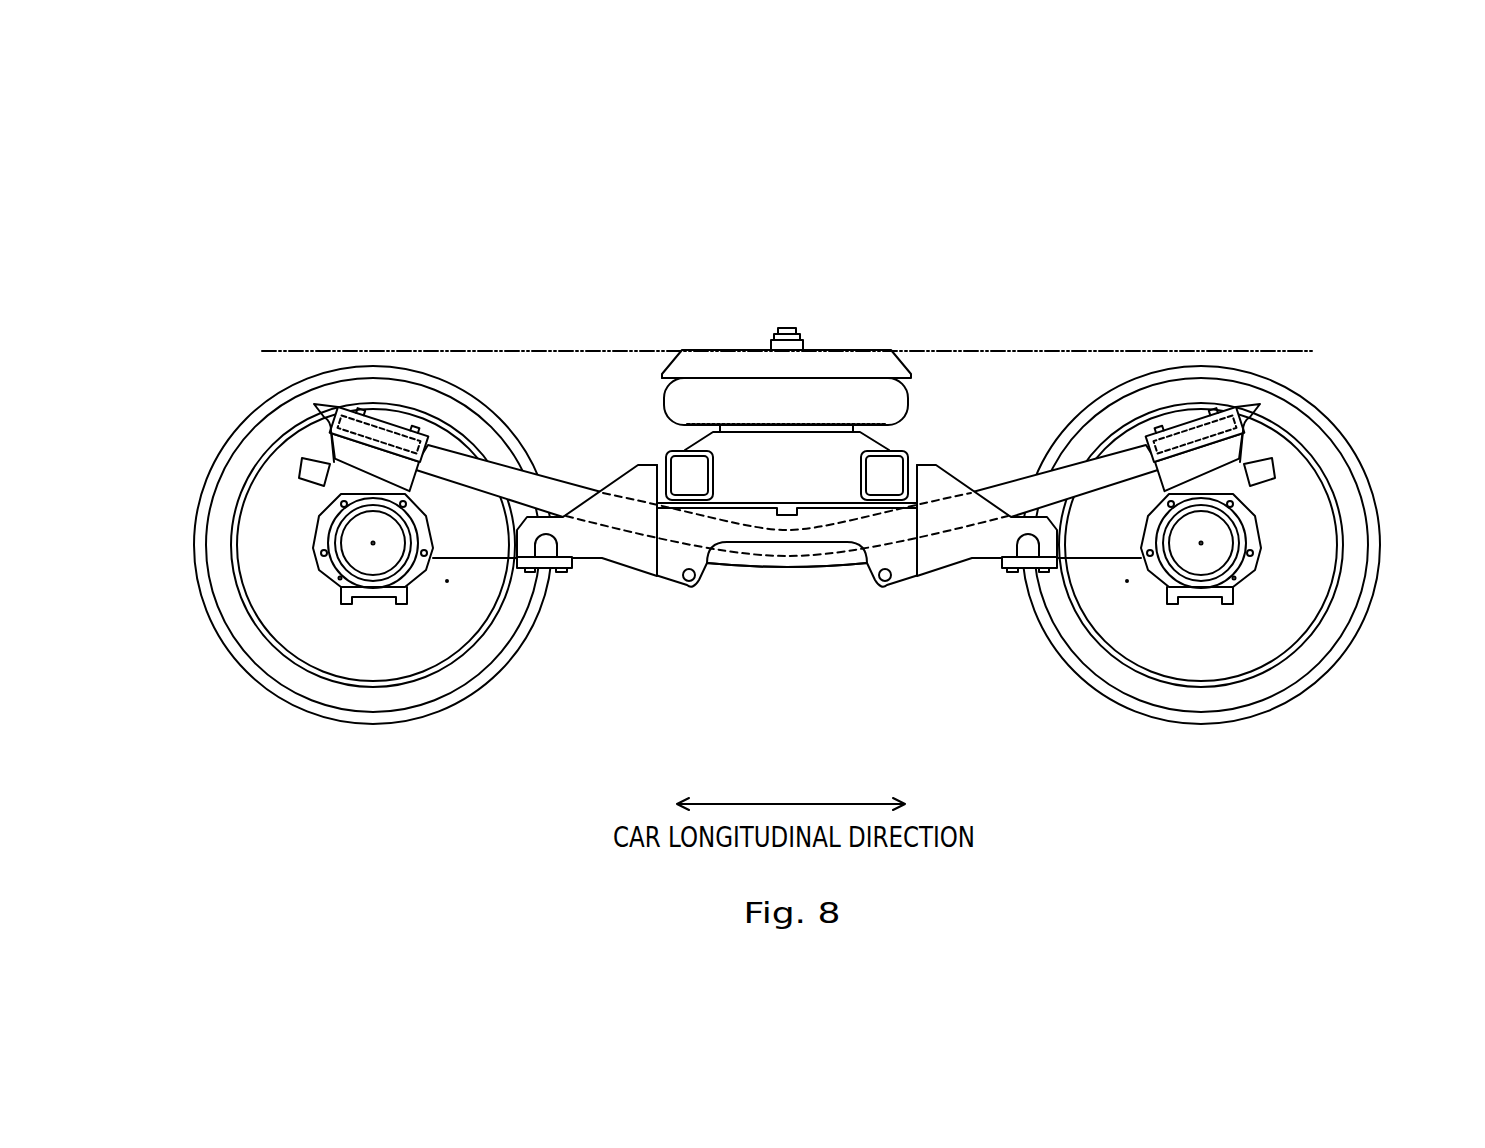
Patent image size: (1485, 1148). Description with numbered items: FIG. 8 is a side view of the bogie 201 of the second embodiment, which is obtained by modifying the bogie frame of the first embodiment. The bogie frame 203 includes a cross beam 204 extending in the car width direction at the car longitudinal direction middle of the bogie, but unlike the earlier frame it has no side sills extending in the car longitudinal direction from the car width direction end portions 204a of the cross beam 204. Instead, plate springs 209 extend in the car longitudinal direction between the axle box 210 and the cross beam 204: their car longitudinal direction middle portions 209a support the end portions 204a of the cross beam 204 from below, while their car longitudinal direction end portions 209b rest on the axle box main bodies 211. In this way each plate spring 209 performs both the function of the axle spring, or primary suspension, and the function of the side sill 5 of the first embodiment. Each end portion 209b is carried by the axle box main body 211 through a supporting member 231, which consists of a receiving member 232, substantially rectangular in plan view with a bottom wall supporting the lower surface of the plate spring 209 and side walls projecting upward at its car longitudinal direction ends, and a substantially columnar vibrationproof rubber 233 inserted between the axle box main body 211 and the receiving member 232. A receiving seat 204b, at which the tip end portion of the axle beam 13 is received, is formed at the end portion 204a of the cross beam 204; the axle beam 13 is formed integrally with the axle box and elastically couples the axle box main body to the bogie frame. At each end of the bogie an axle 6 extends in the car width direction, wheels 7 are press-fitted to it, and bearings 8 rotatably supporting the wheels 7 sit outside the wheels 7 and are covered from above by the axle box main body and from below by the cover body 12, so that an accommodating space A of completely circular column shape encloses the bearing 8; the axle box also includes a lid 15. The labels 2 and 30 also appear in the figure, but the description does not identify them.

The air spring 2 is at (675, 400).
The side sill 5 is at (787, 545).
The axle 6 is at (323, 580).
The wheel 7 is at (198, 541).
The bearing 8 is at (377, 585).
The cover body 12 is at (347, 585).
The axle beam 13 is at (487, 550).
The lid 15 is at (372, 588).
The car body floor line 30 is at (1062, 352).
The bogie 201 is at (787, 445).
The bogie frame 203 is at (894, 444).
The cross beam 204 is at (795, 468).
The car width direction end portion of the cross beam 204a is at (672, 448).
The receiving seat 204b is at (623, 553).
The plate spring 209 is at (750, 579).
The car longitudinal direction middle portion of the plate spring 209a is at (828, 569).
The car longitudinal direction end portion of the plate spring 209b is at (398, 404).
The axle box 210 is at (455, 591).
The axle box main body 211 is at (343, 491).
The supporting member 231 is at (787, 426).
The receiving member 232 is at (316, 406).
The vibrationproof rubber 233 is at (348, 455).
The accommodating space A is at (340, 578).